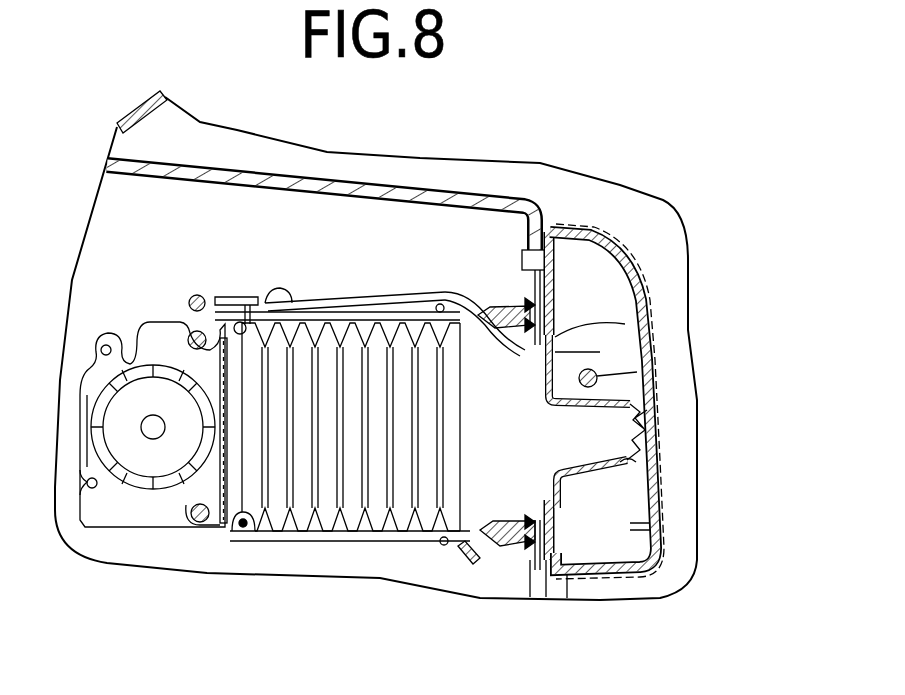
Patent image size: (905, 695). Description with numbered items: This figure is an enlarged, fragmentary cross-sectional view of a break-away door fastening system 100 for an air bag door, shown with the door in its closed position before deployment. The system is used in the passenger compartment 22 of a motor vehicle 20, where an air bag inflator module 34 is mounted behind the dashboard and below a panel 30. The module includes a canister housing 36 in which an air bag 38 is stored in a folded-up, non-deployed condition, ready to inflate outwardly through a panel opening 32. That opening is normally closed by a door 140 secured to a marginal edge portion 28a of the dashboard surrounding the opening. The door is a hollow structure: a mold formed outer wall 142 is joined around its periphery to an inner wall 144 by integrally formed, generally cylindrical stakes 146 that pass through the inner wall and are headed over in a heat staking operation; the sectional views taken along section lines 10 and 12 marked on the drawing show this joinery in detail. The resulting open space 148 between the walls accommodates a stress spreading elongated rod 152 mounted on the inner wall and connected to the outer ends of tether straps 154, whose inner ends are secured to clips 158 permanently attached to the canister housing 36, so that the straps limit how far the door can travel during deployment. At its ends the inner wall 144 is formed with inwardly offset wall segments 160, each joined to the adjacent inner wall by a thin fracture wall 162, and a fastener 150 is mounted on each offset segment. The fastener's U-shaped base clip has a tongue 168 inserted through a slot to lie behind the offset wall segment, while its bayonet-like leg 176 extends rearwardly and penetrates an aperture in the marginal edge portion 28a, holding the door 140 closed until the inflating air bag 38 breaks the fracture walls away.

The break-away door fastening system 100 is at (678, 191).
The motor vehicle 20 is at (127, 98).
The panel 30 is at (427, 191).
The passenger compartment 22 is at (590, 202).
The section line 10 is at (604, 137).
The section line 12 is at (473, 270).
The canister housing 36 is at (203, 537).
The air bag 38 is at (307, 395).
The clips 158 is at (228, 297).
The tether straps 154 is at (366, 301).
The air bag inflator module 34 is at (337, 556).
The bayonet-like leg 176 is at (477, 312).
The fastener 150 is at (491, 300).
The offset wall segment 160 is at (562, 310).
The fracture wall 162 is at (556, 291).
The door 140 is at (672, 500).
The panel opening 32 is at (537, 360).
The marginal edge portion 28a is at (530, 341).
The inner wall 144 is at (580, 468).
The stakes 146 is at (625, 481).
The stress spreading elongated rod 152 is at (631, 365).
The open space 148 is at (593, 338).
The tongue 168 is at (667, 332).
The outer wall 142 is at (653, 388).